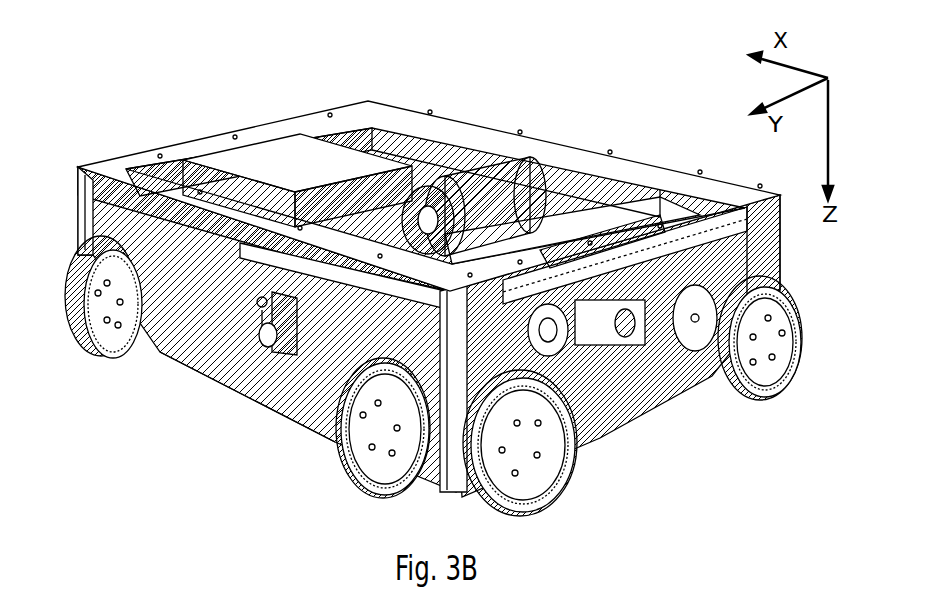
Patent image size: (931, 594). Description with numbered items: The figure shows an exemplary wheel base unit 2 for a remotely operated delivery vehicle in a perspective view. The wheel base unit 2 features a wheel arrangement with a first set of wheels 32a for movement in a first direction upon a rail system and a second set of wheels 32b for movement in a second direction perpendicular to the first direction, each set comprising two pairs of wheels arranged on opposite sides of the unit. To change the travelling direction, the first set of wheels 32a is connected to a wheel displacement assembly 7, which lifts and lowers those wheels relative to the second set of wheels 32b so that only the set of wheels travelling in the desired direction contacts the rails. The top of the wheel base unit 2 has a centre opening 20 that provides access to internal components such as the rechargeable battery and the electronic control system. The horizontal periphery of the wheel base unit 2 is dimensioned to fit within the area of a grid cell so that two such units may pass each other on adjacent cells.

The wheel base unit 2 is at (185, 116).
The wheel displacement assembly 7 is at (261, 289).
The centre opening 20 is at (348, 194).
The first set of wheels 32a is at (393, 453).
The second set of wheels 32b is at (740, 388).